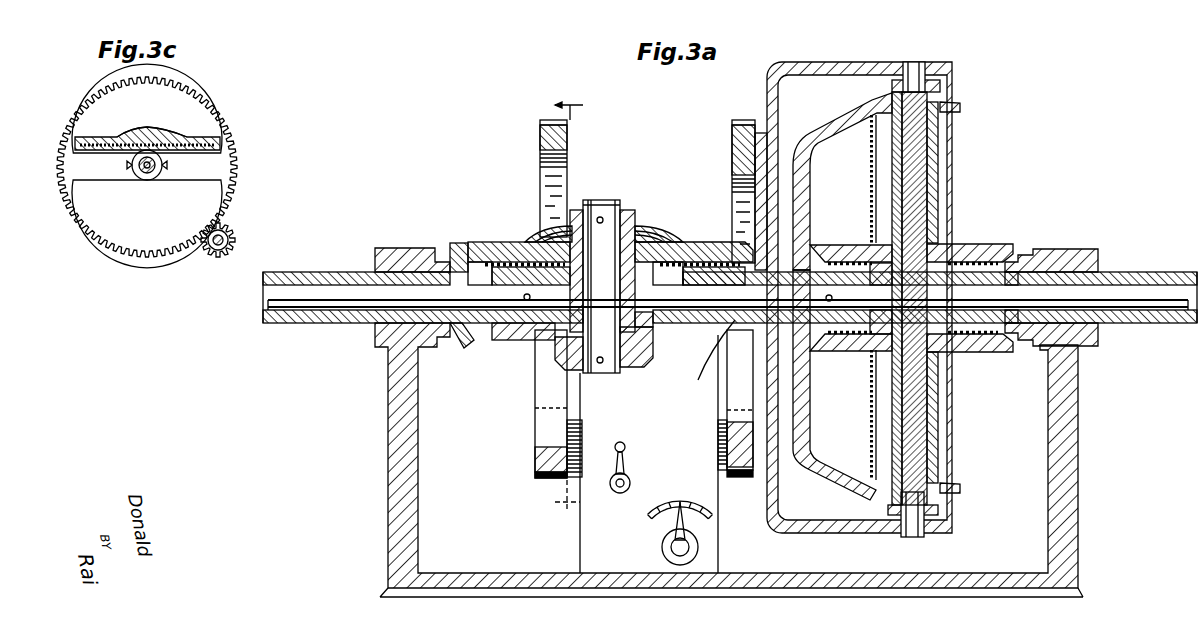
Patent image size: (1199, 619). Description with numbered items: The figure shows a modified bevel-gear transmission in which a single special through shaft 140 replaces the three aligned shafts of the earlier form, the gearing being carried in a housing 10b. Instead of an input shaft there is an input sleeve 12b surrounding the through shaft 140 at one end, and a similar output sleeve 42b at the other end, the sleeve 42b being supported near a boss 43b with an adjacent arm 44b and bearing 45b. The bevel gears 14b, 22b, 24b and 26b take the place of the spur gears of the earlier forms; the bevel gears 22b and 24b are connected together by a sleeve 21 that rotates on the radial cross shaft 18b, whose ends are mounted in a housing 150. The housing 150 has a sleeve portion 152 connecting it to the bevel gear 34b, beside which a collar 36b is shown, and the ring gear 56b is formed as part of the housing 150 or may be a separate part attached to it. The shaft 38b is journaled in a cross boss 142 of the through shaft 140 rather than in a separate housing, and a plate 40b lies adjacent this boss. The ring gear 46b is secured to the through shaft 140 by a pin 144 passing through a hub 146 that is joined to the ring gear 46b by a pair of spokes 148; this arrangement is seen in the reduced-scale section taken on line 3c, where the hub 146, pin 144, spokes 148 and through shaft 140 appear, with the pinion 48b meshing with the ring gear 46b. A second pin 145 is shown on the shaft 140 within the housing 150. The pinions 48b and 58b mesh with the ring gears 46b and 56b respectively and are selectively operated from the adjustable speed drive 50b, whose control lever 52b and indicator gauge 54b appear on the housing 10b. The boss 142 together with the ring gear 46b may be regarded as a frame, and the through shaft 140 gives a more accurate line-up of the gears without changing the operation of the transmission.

In FIG. 3A, the housing 10b is at (395, 448).
In FIG. 3A, the input sleeve 12b is at (1157, 257).
In FIG. 3A, the bevel gear 14b is at (1022, 262).
In FIG. 3A, the radial shaft 18b is at (917, 165).
In FIG. 3A, the sleeve 21 is at (940, 191).
In FIG. 3A, the bevel gear 22b is at (974, 250).
In FIG. 3A, the bevel gear 24b is at (960, 107).
In FIG. 3A, the bevel gear 26b is at (832, 122).
In FIG. 3A, the bevel gear 34b is at (648, 330).
In FIG. 3A, the collar 36b is at (640, 348).
In FIG. 3A, the shaft 38b is at (603, 205).
In FIG. 3C, the cam plate 40b is at (103, 136).
In FIG. 3A, the cam plate 40b is at (710, 242).
In FIG. 3A, the output sleeve 42b is at (318, 272).
In FIG. 3A, the boss 43b is at (410, 236).
In FIG. 3A, the arm 44b is at (466, 346).
In FIG. 3A, the bearing 45b is at (527, 328).
In FIG. 3C, the ring gear 46b is at (222, 121).
In FIG. 3A, the ring gear 46b is at (540, 128).
In FIG. 3C, the pinion 48b is at (232, 235).
In FIG. 3A, the pinion 48b is at (535, 435).
In FIG. 3A, the adjustable speed drive 50b is at (672, 424).
In FIG. 3A, the control lever 52b is at (611, 475).
In FIG. 3A, the indicator gauge 54b is at (662, 548).
In FIG. 3A, the ring gear 56b is at (740, 120).
In FIG. 3A, the pinion 58b is at (735, 480).
In FIG. 3C, the through shaft 140 is at (140, 173).
In FIG. 3A, the through shaft 140 is at (275, 298).
In FIG. 3A, the cross boss 142 is at (540, 335).
In FIG. 3C, the pin 144 is at (163, 165).
In FIG. 3A, the pin 144 is at (527, 297).
In FIG. 3A, the pin 145 is at (829, 302).
In FIG. 3C, the hub 146 is at (157, 177).
In FIG. 3A, the hub 146 is at (520, 275).
In FIG. 3C, the spokes 148 is at (166, 158).
In FIG. 3A, the housing 150 is at (848, 52).
In FIG. 3A, the sleeve portion 152 is at (697, 358).
In FIG. 3A, the section line 3c is at (558, 301).